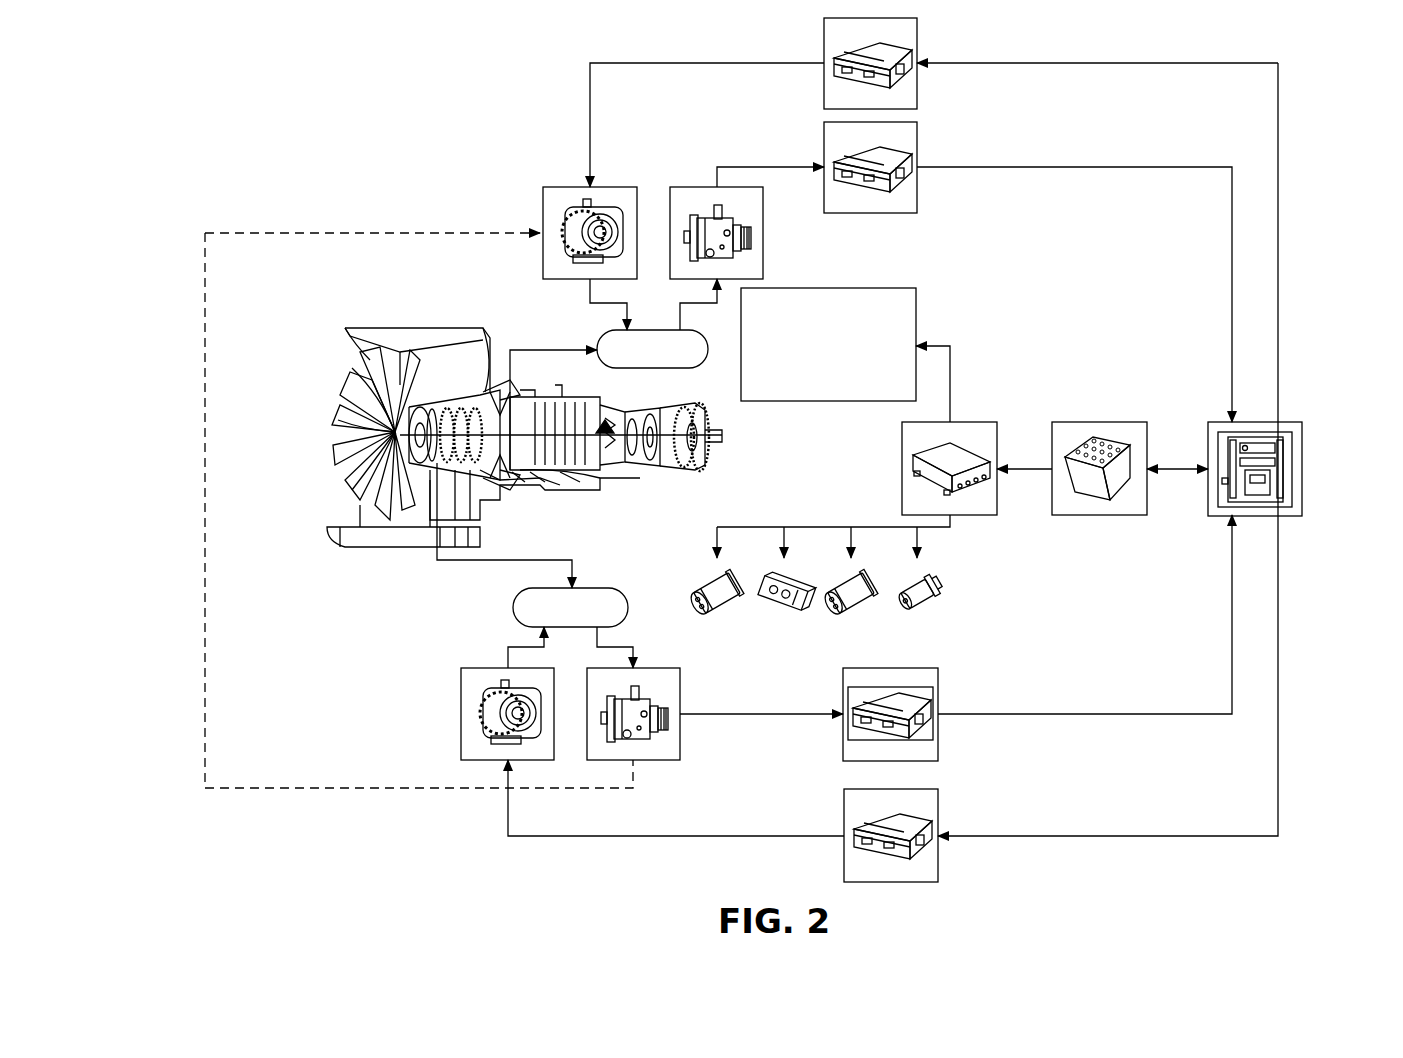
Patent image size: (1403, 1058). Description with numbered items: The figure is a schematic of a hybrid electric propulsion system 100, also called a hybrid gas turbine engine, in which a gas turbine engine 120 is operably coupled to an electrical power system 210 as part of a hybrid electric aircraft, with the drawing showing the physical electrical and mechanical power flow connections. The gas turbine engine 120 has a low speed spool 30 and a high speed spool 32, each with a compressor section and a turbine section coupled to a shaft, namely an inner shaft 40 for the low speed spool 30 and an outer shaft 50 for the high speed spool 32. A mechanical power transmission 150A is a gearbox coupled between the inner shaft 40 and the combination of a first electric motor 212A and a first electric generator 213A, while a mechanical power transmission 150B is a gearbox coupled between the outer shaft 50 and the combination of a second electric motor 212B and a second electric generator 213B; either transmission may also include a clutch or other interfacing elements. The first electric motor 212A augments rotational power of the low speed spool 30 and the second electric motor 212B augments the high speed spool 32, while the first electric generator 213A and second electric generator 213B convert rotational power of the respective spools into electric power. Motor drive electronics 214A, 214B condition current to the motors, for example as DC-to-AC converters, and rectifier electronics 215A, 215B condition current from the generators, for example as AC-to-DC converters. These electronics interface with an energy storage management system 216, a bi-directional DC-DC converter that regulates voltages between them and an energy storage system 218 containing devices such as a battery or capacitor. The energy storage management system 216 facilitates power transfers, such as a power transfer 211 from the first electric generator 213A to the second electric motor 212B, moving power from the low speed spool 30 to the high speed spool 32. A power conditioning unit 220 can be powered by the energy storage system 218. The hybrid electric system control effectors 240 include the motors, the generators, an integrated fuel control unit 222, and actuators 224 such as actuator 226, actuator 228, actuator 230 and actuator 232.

The hybrid electric propulsion system 100 is at (397, 108).
The gas turbine engine 120 is at (487, 405).
The low speed spool 30 is at (478, 397).
The inner shaft 40 is at (362, 394).
The outer shaft 50 is at (518, 463).
The high speed spool 32 is at (610, 467).
The mechanical power transmission 150A is at (513, 607).
The mechanical power transmission 150B is at (600, 335).
The electrical power system 210 is at (903, 268).
The power transfer 211 is at (203, 462).
The first electric motor 212A is at (461, 710).
The second electric motor 212B is at (580, 187).
The first electric generator 213A is at (683, 727).
The second electric generator 213B is at (701, 187).
The motor drive electronics 214A is at (938, 818).
The motor drive electronics 214B is at (917, 52).
The rectifier electronics 215A is at (938, 695).
The rectifier electronics 215B is at (917, 152).
The energy storage management system 216 is at (1302, 470).
The energy storage system 218 is at (1100, 422).
The power conditioning unit 220 is at (970, 422).
The integrated fuel control unit 222 is at (835, 288).
The actuators 224 is at (857, 591).
The actuator 226 is at (716, 612).
The actuator 228 is at (775, 605).
The actuator 230 is at (856, 612).
The actuator 232 is at (936, 590).
The hybrid electric system control effectors 240 is at (1118, 328).